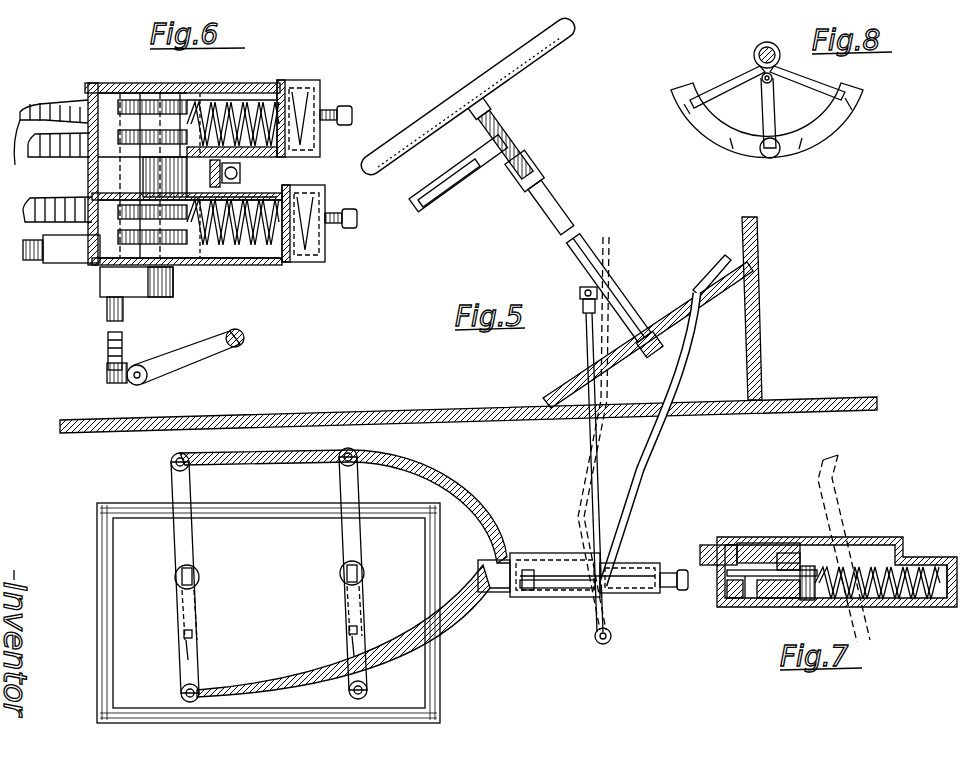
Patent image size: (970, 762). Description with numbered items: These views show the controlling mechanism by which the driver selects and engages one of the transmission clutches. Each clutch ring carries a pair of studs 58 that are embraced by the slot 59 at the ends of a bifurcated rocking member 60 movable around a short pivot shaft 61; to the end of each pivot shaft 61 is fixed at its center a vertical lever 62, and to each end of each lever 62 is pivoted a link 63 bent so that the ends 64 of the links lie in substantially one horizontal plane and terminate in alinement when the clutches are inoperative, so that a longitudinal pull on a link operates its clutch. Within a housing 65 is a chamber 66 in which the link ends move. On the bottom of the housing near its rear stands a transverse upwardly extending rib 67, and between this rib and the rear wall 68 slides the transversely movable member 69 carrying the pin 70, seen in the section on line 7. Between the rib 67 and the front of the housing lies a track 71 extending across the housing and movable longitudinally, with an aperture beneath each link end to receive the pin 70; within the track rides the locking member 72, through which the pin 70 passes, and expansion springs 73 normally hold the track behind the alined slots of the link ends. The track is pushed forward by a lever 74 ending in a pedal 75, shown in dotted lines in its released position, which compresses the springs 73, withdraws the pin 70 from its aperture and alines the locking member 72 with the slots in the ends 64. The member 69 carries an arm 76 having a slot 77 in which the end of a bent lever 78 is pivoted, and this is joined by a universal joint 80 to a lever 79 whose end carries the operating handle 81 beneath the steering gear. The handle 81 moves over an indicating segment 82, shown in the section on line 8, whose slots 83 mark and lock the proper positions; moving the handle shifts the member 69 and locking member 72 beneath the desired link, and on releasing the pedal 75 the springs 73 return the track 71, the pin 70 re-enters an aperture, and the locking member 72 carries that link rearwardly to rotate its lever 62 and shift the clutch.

In FIG. 6, the section line 7— 7 is at (15, 241).
In FIG. 5, the section line 8— 8 is at (610, 33).
In FIG. 5, the studs 58 is at (196, 634).
In FIG. 5, the slot 59 is at (190, 658).
In FIG. 5, the bifurcated rocking member 60 is at (197, 603).
In FIG. 5, the pivot shaft 61 is at (196, 578).
In FIG. 5, the vertical lever 62 is at (178, 491).
In FIG. 6, the link 63 is at (51, 161).
In FIG. 5, the link 63 is at (275, 458).
In FIG. 6, the ends of the links 64 is at (260, 93).
In FIG. 7, the ends of the links 64 is at (773, 545).
In FIG. 6, the housing 65 is at (282, 263).
In FIG. 5, the housing 65 is at (545, 553).
In FIG. 7, the housing 65 is at (885, 540).
In FIG. 7, the chamber 66 is at (918, 552).
In FIG. 6, the transverse upwardly extending rib 67 is at (103, 270).
In FIG. 7, the transverse upwardly extending rib 67 is at (745, 605).
In FIG. 6, the rear wall 68 is at (92, 185).
In FIG. 7, the member 69 is at (735, 544).
In FIG. 6, the pin 70 is at (213, 266).
In FIG. 7, the pin 70 is at (825, 563).
In FIG. 6, the track 71 is at (200, 272).
In FIG. 7, the track 71 is at (808, 605).
In FIG. 6, the locking member 72 is at (138, 309).
In FIG. 7, the locking member 72 is at (778, 605).
In FIG. 6, the expansion springs 73 is at (197, 107).
In FIG. 7, the expansion springs 73 is at (893, 605).
In FIG. 5, the lever 74 is at (692, 368).
In FIG. 5, the pedal 75 is at (718, 262).
In FIG. 6, the arm 76 is at (109, 355).
In FIG. 5, the arm 76 is at (520, 596).
In FIG. 6, the slot 77 is at (117, 386).
In FIG. 6, the bent lever 78 is at (182, 362).
In FIG. 5, the bent lever 78 is at (598, 512).
In FIG. 5, the lever 79 is at (557, 222).
In FIG. 5, the universal joint 80 is at (586, 306).
In FIG. 5, the operating handle 81 is at (452, 185).
In FIG. 8, the indicating segment 82 is at (838, 131).
In FIG. 8, the slots 83 is at (686, 114).